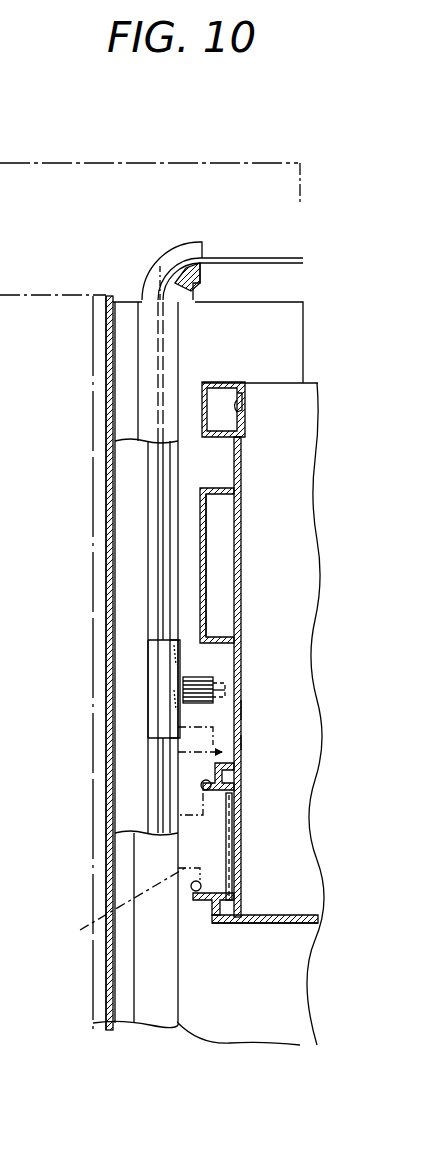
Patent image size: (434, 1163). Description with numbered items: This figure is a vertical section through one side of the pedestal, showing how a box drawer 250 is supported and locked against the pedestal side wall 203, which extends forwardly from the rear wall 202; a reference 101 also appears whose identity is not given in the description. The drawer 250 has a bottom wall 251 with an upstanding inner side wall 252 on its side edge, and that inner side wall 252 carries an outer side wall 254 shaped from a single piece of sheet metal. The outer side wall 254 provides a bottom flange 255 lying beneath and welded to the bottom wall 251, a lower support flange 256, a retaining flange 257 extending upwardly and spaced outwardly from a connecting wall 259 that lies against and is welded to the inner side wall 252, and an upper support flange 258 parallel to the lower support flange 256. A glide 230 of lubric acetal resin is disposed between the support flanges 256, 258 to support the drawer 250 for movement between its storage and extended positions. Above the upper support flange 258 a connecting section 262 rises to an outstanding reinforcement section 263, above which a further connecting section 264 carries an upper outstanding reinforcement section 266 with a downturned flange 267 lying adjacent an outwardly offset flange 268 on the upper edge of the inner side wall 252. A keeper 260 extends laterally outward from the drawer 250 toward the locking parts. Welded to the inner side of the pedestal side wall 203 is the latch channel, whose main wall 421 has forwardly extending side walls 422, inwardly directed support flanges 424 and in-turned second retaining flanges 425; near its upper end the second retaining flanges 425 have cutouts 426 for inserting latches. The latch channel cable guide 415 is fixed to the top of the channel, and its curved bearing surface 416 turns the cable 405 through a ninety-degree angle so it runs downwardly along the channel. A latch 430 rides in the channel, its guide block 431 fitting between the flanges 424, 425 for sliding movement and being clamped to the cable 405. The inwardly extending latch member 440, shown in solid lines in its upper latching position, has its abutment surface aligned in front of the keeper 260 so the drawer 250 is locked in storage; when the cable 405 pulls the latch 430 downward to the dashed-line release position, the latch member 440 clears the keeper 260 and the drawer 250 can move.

The vehicle body datum 101 is at (76, 160).
The rear wall 202 is at (240, 340).
The side wall 203 is at (107, 372).
The glide 230 is at (112, 900).
The box drawer 250 is at (300, 378).
The bottom wall 251 is at (267, 915).
The inner side wall 252 is at (241, 742).
The outer side wall 254 is at (230, 458).
The bottom flange 255 is at (245, 925).
The lower support flange 256 is at (222, 902).
The retaining flange 257 is at (194, 892).
The upper support flange 258 is at (228, 782).
The connecting wall 259 is at (233, 840).
The keeper 260 is at (215, 690).
The connecting section 262 is at (241, 712).
The reinforcement section 263 is at (208, 565).
The connecting section 264 is at (243, 470).
The upper reinforcement section 266 is at (210, 385).
The downturned flange 267 is at (243, 400).
The outwardly offset flange 268 is at (233, 410).
The cable 405 is at (250, 257).
The latch channel cable guide 415 is at (166, 248).
The curved bearing surface 416 is at (180, 266).
The main wall 421 is at (104, 628).
The side wall 422 is at (134, 670).
The support flange 424 is at (150, 580).
The second retaining flange 425 is at (205, 490).
The cutout 426 is at (170, 514).
The latch 430 is at (160, 724).
The guide block 431 is at (158, 696).
The latch member 440 is at (190, 681).